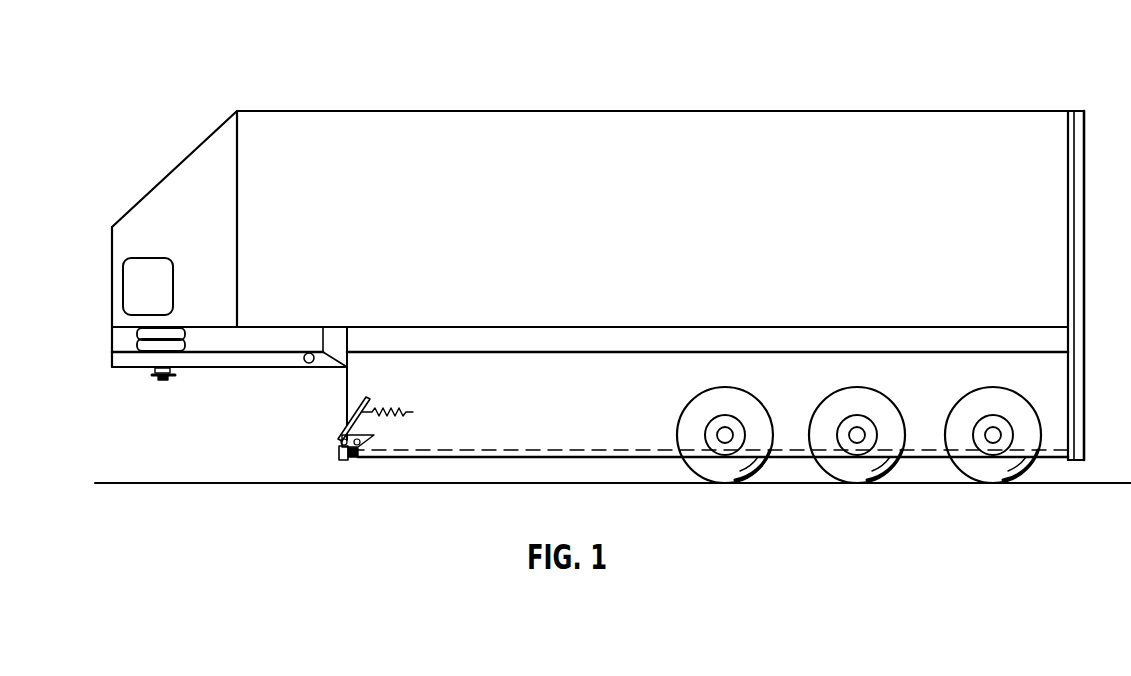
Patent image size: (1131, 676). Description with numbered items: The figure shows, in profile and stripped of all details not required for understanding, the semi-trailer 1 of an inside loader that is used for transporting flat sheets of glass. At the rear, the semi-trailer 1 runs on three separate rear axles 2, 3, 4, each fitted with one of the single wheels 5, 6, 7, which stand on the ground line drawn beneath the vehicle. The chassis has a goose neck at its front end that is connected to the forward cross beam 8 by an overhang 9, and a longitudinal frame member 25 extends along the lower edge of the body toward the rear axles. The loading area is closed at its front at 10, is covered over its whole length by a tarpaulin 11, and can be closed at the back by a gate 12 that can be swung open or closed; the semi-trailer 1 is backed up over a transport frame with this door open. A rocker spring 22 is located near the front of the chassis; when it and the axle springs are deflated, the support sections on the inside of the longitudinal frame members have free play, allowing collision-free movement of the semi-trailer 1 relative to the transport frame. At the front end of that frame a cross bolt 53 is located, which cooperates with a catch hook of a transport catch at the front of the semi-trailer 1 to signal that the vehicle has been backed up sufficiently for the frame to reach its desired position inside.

The semi-trailer 1 is at (950, 100).
The rear axle 2 is at (725, 435).
The rear axle 3 is at (857, 435).
The rear axle 4 is at (993, 435).
The single wheel 5 is at (750, 470).
The single wheel 6 is at (883, 470).
The single wheel 7 is at (1020, 467).
The forward cross beam 8 is at (348, 397).
The overhang 9 is at (332, 376).
The front closure of loading area 10 is at (173, 189).
The tarpaulin 11 is at (613, 127).
The gate 12 is at (1082, 240).
The rocker spring 22 is at (137, 337).
The longitudinal frame member 25 is at (573, 353).
The cross bolt 53 is at (358, 458).